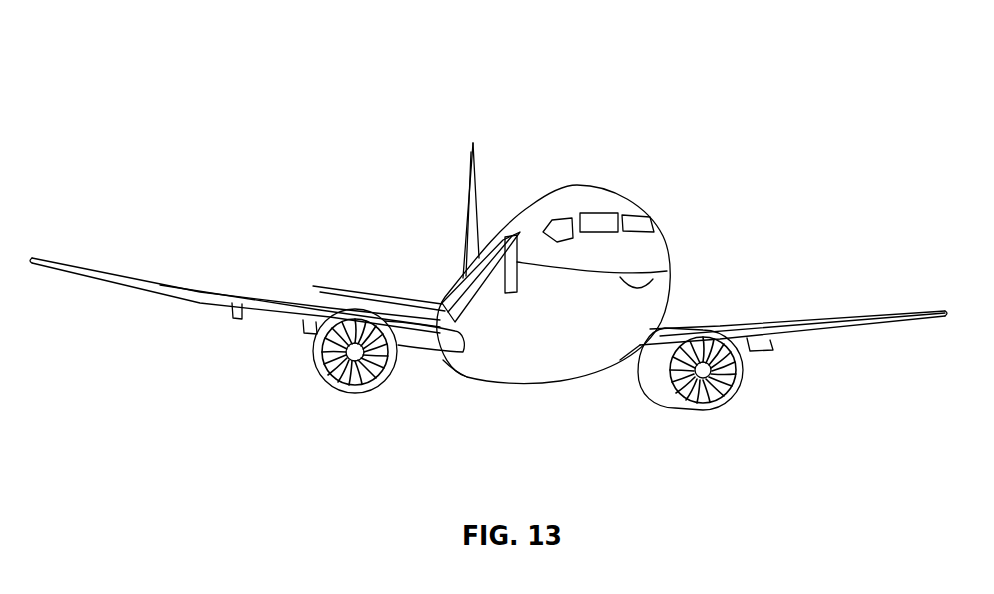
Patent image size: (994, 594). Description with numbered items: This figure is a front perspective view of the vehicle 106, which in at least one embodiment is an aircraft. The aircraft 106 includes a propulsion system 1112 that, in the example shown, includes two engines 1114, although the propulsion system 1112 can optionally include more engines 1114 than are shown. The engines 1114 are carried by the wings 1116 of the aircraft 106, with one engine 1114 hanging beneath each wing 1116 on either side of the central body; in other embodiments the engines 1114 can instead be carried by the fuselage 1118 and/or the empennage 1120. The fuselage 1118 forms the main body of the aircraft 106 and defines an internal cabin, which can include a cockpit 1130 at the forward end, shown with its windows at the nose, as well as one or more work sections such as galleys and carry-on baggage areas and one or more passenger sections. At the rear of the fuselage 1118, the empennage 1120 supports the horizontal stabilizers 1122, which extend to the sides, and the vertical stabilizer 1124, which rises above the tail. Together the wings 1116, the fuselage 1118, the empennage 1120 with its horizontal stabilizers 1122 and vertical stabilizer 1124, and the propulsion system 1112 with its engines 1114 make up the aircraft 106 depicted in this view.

The vehicle 106 is at (262, 96).
The propulsion system 1112 is at (780, 403).
The engines 1114 is at (348, 392).
The wings 1116 is at (157, 282).
The fuselage 1118 is at (668, 243).
The empennage 1120 is at (463, 273).
The horizontal stabilizers 1122 is at (347, 287).
The vertical stabilizer 1124 is at (470, 182).
The cockpit 1130 is at (594, 217).